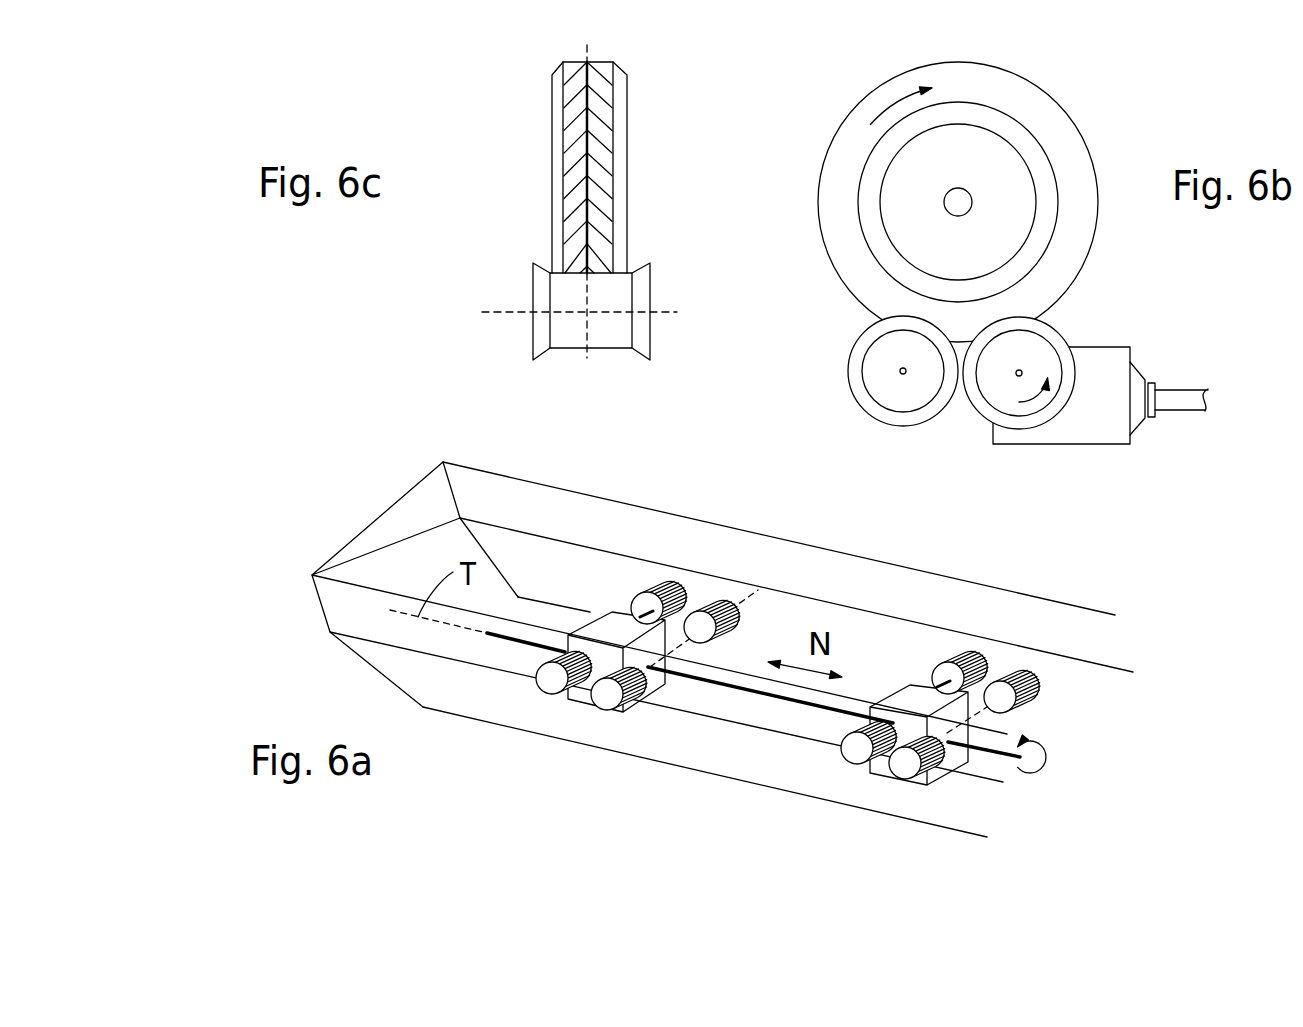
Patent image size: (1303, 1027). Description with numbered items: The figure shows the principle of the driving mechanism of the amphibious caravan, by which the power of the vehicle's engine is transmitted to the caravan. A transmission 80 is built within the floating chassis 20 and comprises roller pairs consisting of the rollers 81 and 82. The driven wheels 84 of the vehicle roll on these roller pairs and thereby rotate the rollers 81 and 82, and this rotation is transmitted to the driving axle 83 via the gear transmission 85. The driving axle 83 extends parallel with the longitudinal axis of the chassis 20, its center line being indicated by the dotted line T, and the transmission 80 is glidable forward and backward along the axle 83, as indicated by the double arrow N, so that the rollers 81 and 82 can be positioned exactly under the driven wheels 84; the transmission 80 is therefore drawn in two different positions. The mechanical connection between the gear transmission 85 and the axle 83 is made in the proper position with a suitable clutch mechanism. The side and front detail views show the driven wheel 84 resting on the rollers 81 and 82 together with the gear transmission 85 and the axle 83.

In FIG. 6A, the chassis 20 is at (340, 511).
In FIG. 6B, the transmission 80 is at (1140, 314).
In FIG. 6A, the transmission 80 is at (1088, 740).
In FIG. 6C, the roller 81 is at (531, 304).
In FIG. 6B, the roller 81 is at (888, 380).
In FIG. 6A, the roller 81 is at (775, 602).
In FIG. 6C, the roller 82 is at (540, 298).
In FIG. 6B, the roller 82 is at (1033, 343).
In FIG. 6A, the roller 82 is at (673, 580).
In FIG. 6B, the driving axle 83 is at (1183, 403).
In FIG. 6A, the driving axle 83 is at (510, 635).
In FIG. 6C, the driven wheel 84 is at (575, 117).
In FIG. 6B, the driven wheel 84 is at (847, 137).
In FIG. 6B, the gear transmission 85 is at (1060, 427).
In FIG. 6A, the gear transmission 85 is at (612, 623).